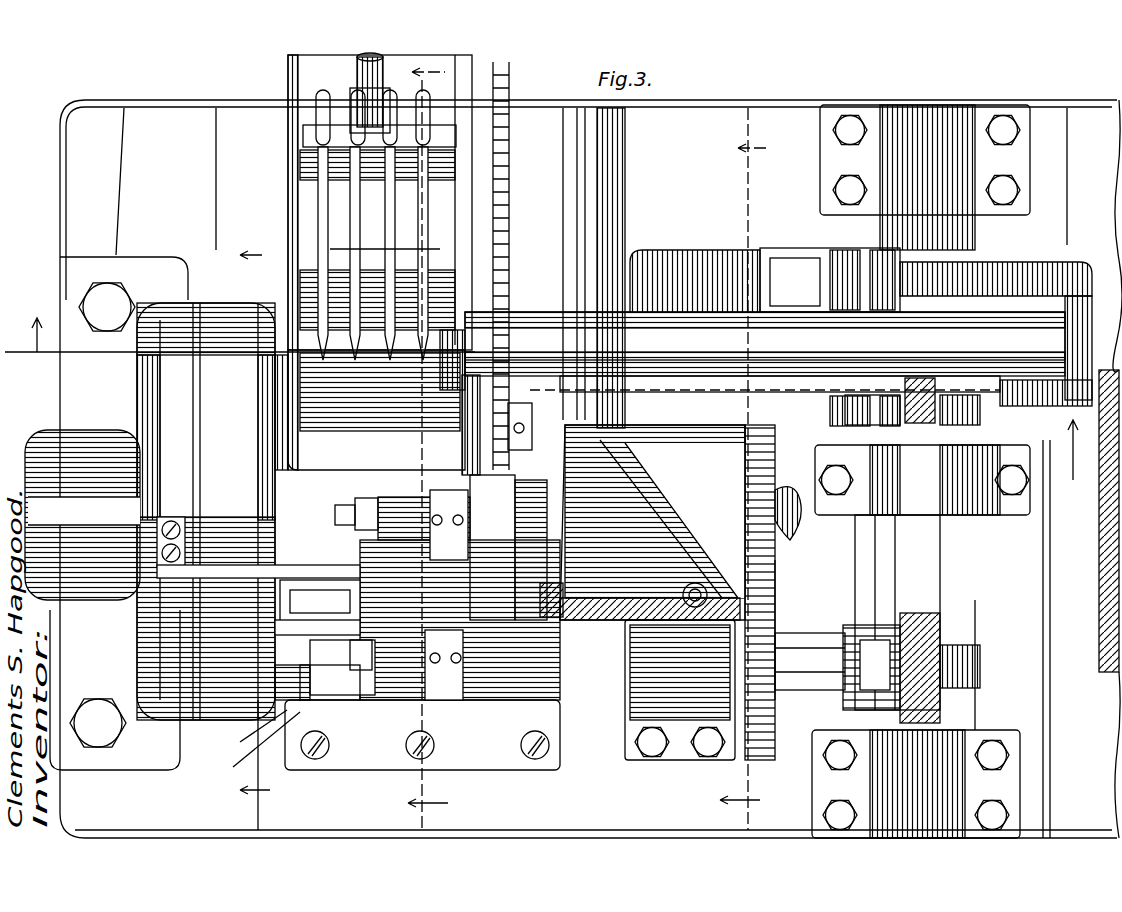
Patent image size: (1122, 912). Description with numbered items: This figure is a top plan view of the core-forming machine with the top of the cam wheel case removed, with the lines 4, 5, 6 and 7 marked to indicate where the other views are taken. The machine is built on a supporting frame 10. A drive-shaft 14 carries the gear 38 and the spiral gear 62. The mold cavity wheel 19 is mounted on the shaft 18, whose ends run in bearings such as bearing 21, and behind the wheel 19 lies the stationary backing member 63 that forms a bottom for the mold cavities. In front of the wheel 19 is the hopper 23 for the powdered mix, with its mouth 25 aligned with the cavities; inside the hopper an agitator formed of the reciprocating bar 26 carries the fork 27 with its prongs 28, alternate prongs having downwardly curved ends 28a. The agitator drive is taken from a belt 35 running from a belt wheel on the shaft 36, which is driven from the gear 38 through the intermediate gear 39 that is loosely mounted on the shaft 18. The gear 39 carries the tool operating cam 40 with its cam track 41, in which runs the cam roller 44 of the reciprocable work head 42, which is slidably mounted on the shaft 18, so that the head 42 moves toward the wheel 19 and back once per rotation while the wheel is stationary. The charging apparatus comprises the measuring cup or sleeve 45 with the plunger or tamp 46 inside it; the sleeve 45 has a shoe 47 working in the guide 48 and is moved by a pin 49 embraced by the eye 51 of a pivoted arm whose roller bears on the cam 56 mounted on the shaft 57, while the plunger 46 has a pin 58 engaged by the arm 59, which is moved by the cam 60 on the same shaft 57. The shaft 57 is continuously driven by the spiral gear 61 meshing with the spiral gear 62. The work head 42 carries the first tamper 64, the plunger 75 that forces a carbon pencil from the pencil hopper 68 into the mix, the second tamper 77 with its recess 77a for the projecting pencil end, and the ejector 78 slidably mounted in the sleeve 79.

The supporting frame 10 is at (1070, 125).
The drive-shaft 14 is at (798, 650).
The shaft 18 is at (795, 500).
The mold cavity wheel 19 is at (228, 330).
The bearing 21 is at (65, 470).
The hopper 23 is at (288, 78).
The mouth 25 is at (285, 398).
The reciprocating bar 26 is at (360, 75).
The fork 27 is at (465, 168).
The prongs 28 is at (470, 212).
The downwardly curved prong ends 28a is at (440, 252).
The belt 35 is at (510, 216).
The shaft 36 is at (545, 410).
The gear 38 is at (760, 708).
The intermediate gear 39 is at (760, 578).
The tool operating cam 40 is at (730, 512).
The cam track 41 is at (630, 400).
The work head 42 is at (488, 718).
The cam roller 44 is at (660, 632).
The measuring cup or sleeve 45 is at (470, 318).
The plunger or tamp 46 is at (455, 372).
The shoe 47 is at (1000, 342).
The guide 48 is at (700, 320).
The pin 49 is at (785, 428).
The eye 51 is at (852, 462).
The cam 56 is at (1018, 385).
The shaft 57 is at (925, 568).
The pin 58 is at (848, 262).
The arm 59 is at (796, 272).
The cam 60 is at (1010, 278).
The spiral gear 61 is at (965, 660).
The spiral gear 62 is at (945, 706).
The backing member 63 is at (152, 392).
The first tamper 64 is at (350, 503).
The hopper 68 is at (300, 560).
The plunger 75 is at (412, 600).
The second tamper 77 is at (352, 650).
The recess 77a is at (365, 690).
The ejector 78 is at (250, 733).
The sleeve 79 is at (253, 746).
The line 4 is at (240, 347).
The line 5 is at (430, 444).
The line 6 is at (745, 469).
The line 7 is at (660, 537).